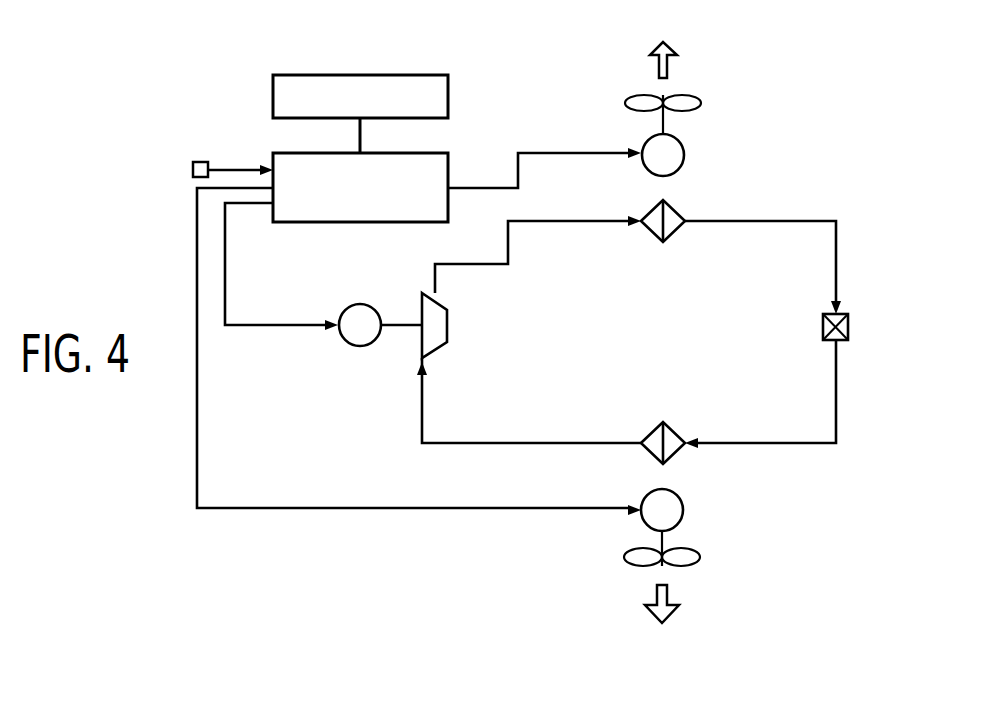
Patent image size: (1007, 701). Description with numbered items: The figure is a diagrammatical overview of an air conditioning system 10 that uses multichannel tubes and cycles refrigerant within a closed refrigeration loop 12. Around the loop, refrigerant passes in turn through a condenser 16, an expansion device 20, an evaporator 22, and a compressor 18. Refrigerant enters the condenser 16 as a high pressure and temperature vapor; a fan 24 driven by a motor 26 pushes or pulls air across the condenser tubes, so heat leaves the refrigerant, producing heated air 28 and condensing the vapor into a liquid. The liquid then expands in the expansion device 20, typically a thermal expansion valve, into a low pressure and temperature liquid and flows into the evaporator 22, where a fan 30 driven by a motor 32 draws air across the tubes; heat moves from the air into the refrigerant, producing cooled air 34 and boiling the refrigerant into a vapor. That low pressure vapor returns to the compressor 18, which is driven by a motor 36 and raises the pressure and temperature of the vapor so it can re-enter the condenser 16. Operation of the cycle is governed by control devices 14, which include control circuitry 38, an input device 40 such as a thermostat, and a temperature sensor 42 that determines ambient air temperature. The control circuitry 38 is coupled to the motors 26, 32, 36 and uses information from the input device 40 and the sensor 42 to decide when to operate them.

The air conditioning system 10 is at (190, 537).
The closed refrigeration loop 12 is at (866, 232).
The control devices 14 is at (222, 90).
The condenser 16 is at (653, 237).
The compressor 18 is at (449, 325).
The expansion device 20 is at (822, 328).
The evaporator 22 is at (672, 428).
The fan 24 is at (700, 104).
The motor 26 is at (684, 157).
The heated air 28 is at (677, 48).
The fan 30 is at (699, 558).
The motor 32 is at (684, 504).
The cooled air 34 is at (674, 609).
The motor 36 is at (356, 349).
The control circuitry 38 is at (360, 222).
The input device 40 is at (362, 75).
The temperature sensor 42 is at (193, 169).